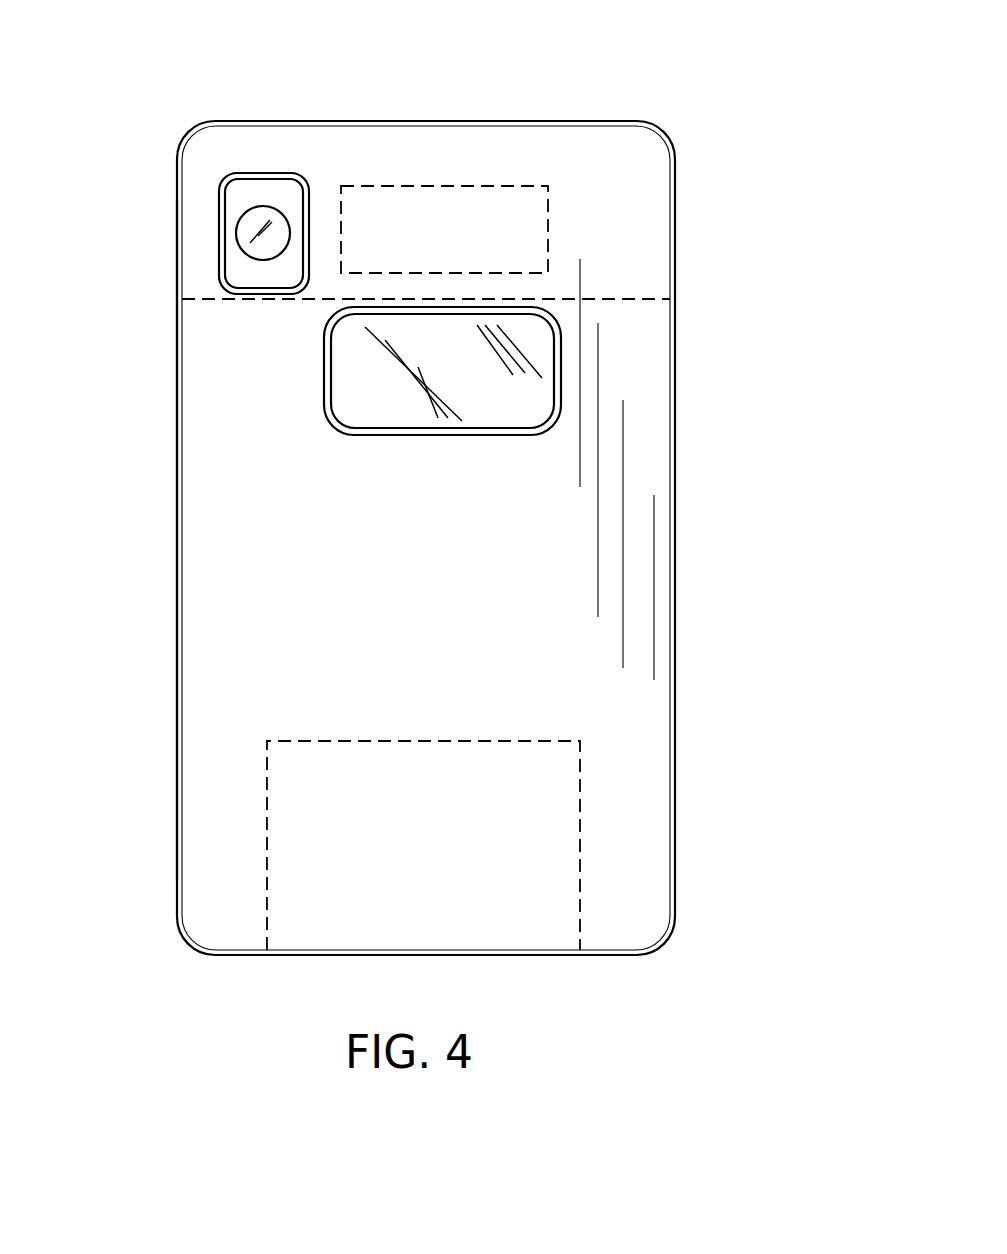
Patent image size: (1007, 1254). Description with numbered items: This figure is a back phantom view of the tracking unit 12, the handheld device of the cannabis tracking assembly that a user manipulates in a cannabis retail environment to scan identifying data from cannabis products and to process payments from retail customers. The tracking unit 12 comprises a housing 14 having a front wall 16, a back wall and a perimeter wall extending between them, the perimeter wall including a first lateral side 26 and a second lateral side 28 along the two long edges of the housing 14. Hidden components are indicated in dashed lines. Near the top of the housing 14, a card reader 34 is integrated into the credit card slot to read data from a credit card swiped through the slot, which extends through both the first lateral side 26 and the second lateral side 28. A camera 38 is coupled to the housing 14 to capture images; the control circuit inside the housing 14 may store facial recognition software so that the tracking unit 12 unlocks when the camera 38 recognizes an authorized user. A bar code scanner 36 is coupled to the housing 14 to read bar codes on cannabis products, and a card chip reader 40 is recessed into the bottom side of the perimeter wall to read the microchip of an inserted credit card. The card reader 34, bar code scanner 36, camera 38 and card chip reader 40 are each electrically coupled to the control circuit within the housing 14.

The tracking unit 12 is at (714, 118).
The housing 14 is at (192, 128).
The front wall 16 is at (235, 482).
The first lateral side 26 is at (178, 625).
The second lateral side 28 is at (659, 588).
The card reader 34 is at (470, 186).
The bar code scanner 36 is at (557, 375).
The camera 38 is at (264, 206).
The card chip reader 40 is at (582, 838).